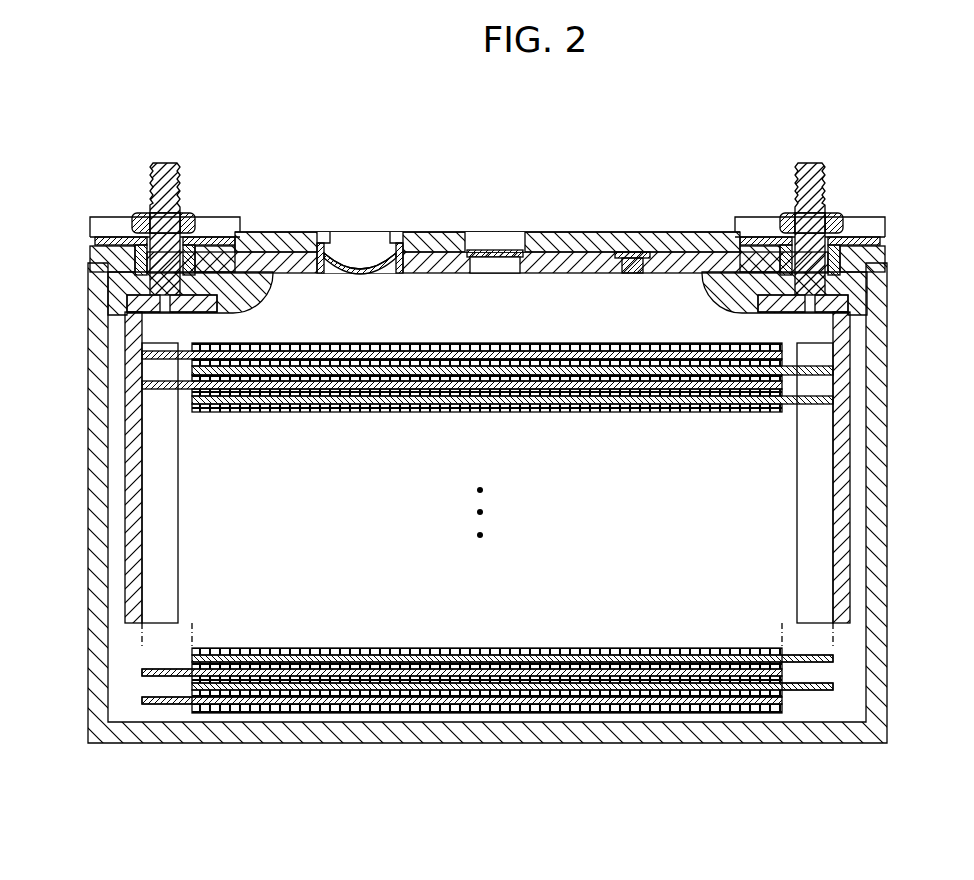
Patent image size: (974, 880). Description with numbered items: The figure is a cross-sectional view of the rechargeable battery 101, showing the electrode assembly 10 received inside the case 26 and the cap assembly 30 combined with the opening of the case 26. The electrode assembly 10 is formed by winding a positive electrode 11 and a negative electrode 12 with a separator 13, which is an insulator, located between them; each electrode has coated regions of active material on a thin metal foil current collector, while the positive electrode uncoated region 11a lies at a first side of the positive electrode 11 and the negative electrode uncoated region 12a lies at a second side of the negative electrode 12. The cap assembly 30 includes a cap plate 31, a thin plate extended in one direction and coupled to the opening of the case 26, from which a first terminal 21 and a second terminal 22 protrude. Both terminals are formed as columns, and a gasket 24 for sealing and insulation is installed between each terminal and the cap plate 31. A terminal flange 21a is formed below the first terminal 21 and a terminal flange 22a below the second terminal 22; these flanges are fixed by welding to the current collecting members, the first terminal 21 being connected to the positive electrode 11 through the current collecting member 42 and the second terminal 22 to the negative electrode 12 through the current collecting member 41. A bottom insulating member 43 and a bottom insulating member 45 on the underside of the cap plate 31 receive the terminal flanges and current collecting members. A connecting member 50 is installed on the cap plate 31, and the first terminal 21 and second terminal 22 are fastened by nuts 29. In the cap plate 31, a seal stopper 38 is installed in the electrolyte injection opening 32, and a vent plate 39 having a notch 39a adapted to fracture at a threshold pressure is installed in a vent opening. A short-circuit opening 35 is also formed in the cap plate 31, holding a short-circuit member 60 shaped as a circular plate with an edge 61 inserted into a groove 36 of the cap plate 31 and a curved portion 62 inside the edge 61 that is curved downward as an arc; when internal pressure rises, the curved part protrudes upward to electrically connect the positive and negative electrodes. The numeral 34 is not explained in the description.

The rechargeable battery 101 is at (482, 116).
The electrode assembly 10 is at (585, 714).
The positive electrode 11 is at (680, 692).
The positive electrode uncoated region 11a is at (825, 692).
The negative electrode 12 is at (275, 705).
The negative electrode uncoated region 12a is at (152, 705).
The separator 13 is at (490, 695).
The first terminal 21 is at (811, 163).
The terminal flange 21a is at (865, 266).
The second terminal 22 is at (166, 163).
The terminal flange 22a is at (110, 262).
The gasket 24 is at (196, 250).
The case 26 is at (880, 541).
The nut 29 is at (140, 213).
The cap assembly 30 is at (487, 237).
The cap plate 31 is at (672, 252).
The electrolyte injection opening 32 is at (632, 265).
The electrolyte injection opening 34 is at (506, 252).
The short-circuit opening 35 is at (400, 273).
The groove 36 is at (408, 273).
The seal stopper 38 is at (630, 252).
The vent plate 39 is at (520, 242).
The notch 39a is at (490, 250).
The current collecting member 41 is at (128, 430).
The current collecting member 42 is at (845, 466).
The bottom insulating member 43 is at (120, 285).
The bottom insulating member 45 is at (855, 285).
The connecting member 50 is at (432, 232).
The short-circuit member 60 is at (375, 283).
The edge 61 is at (318, 273).
The curved portion 62 is at (330, 273).